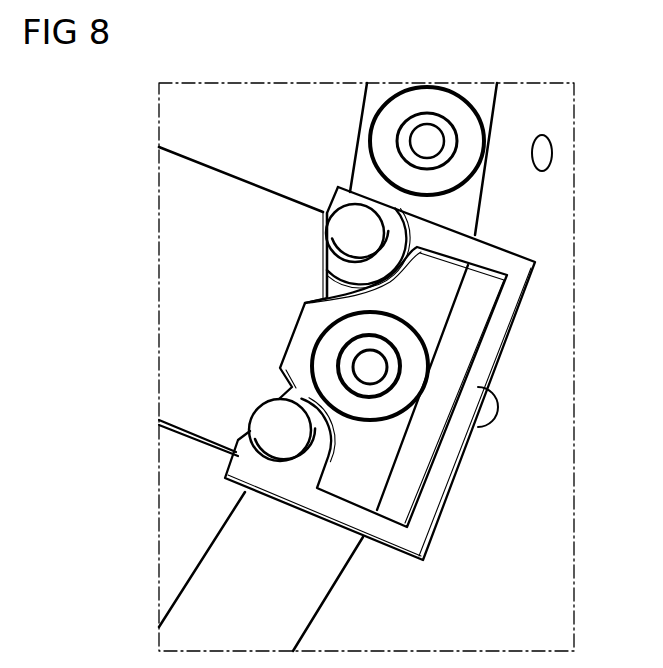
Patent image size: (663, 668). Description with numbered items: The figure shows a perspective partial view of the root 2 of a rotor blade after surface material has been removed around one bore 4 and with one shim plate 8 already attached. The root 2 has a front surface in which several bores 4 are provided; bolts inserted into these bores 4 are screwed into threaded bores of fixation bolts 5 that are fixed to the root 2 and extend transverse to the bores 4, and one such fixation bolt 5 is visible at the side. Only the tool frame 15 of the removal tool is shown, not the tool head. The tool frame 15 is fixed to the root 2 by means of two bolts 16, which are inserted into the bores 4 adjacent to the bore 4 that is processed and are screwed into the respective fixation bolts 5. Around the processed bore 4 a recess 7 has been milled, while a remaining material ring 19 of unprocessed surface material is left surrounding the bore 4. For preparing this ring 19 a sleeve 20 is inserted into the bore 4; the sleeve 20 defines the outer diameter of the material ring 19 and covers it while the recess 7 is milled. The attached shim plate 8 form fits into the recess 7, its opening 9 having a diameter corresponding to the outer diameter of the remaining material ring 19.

The root 2 is at (547, 206).
The bore 4 is at (377, 363).
The fixation bolt 5 is at (548, 153).
The recess 7 is at (390, 400).
The shim plate 8 is at (467, 130).
The opening 9 is at (420, 124).
The tool frame 15 is at (178, 326).
The bolt 16 is at (350, 226).
The remaining material ring 19 is at (430, 122).
The sleeve 20 is at (390, 373).